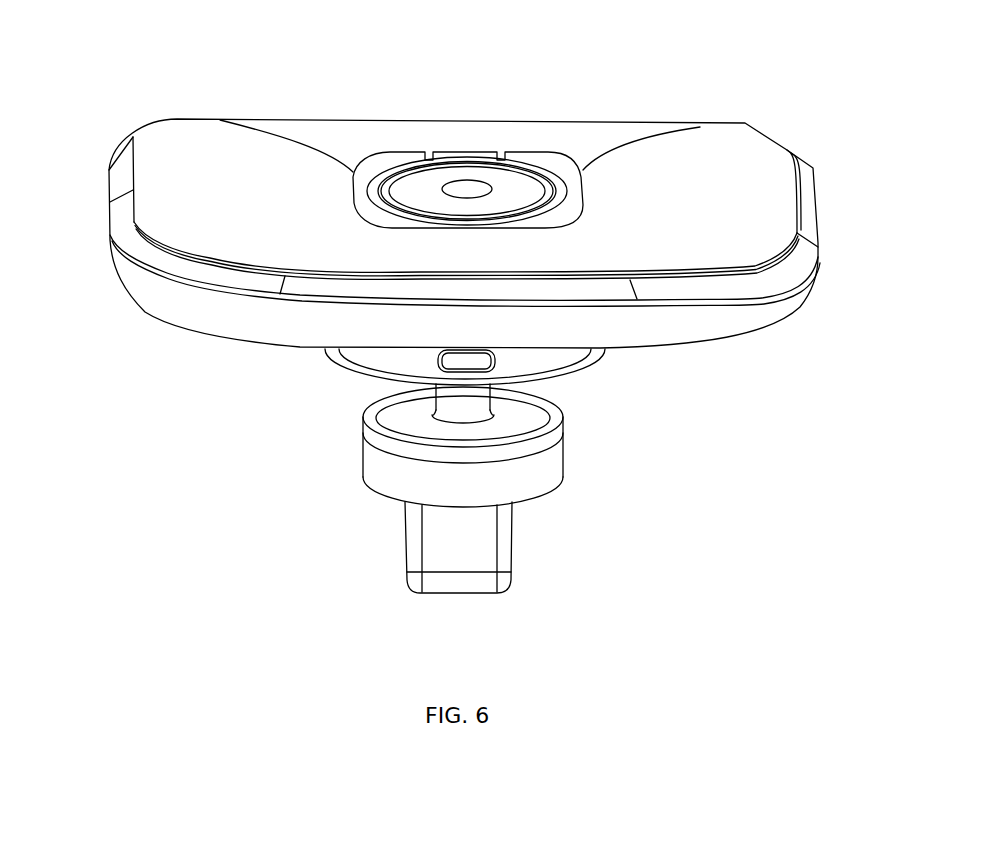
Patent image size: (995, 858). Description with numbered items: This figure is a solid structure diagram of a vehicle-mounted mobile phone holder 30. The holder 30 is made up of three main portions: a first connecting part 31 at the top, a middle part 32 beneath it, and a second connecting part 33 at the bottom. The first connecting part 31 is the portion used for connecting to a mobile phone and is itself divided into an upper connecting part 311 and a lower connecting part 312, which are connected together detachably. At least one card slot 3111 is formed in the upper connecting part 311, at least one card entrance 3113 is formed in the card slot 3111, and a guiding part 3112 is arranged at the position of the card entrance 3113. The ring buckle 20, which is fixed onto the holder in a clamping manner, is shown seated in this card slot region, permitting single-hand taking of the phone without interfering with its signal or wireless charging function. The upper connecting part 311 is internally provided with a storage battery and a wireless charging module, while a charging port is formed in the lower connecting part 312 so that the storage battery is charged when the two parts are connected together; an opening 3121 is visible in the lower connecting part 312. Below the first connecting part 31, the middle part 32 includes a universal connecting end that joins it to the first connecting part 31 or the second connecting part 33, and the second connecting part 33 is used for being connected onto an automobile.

The ring buckle 20 is at (392, 167).
The mobile phone holder 30 is at (212, 446).
The first connecting part 31 is at (140, 233).
The upper connecting part 311 is at (763, 228).
The card slot 3111 is at (350, 183).
The guiding part 3112 is at (628, 137).
The card entrance 3113 is at (574, 152).
The lower connecting part 312 is at (583, 352).
The slot 3121 is at (487, 362).
The middle part 32 is at (481, 402).
The second connecting part 33 is at (513, 483).